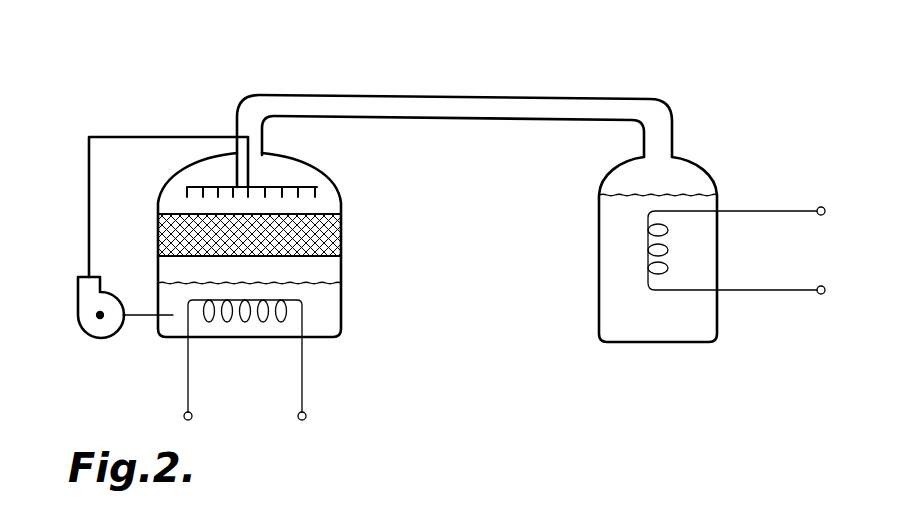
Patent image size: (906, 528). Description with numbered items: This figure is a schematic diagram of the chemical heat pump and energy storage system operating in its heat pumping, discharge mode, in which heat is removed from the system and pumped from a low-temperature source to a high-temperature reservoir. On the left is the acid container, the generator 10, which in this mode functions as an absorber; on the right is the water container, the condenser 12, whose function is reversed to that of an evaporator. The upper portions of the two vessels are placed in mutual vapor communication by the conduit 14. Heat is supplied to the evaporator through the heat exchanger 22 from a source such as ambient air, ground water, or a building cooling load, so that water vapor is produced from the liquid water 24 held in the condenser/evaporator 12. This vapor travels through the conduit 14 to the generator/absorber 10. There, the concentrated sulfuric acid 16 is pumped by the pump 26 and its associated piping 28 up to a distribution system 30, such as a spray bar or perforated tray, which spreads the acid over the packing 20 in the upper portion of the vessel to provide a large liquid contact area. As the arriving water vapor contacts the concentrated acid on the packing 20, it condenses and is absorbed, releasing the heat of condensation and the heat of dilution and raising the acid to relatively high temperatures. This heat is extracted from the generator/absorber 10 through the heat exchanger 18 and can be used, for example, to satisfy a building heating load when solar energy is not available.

The generator 10 is at (157, 195).
The condenser 12 is at (596, 210).
The conduit 14 is at (476, 95).
The sulfuric acid solution 16 is at (320, 313).
The heat exchanger 18 is at (242, 320).
The packing 20 is at (343, 238).
The heat exchanger 22 is at (667, 243).
The liquid water 24 is at (610, 277).
The pump 26 is at (86, 336).
The piping 28 is at (87, 214).
The distribution system 30 is at (212, 186).